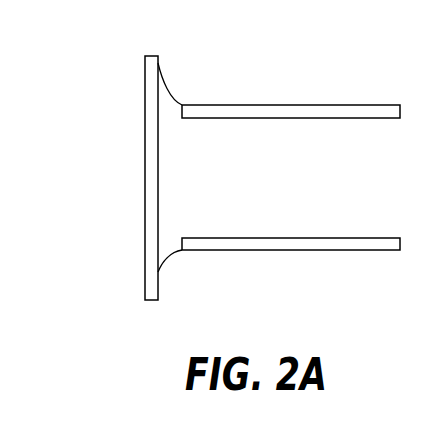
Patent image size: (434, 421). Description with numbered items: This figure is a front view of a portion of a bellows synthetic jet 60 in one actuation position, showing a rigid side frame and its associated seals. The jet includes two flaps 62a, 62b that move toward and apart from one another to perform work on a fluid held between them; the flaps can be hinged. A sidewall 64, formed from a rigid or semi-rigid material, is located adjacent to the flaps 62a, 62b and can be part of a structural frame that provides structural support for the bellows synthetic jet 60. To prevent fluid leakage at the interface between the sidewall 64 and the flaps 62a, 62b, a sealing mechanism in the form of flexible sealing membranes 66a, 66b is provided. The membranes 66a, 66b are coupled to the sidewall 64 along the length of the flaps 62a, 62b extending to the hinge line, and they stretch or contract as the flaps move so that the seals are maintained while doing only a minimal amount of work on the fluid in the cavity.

The bellows synthetic jet 60 is at (107, 55).
The sidewall 64 is at (145, 172).
The flap 62a is at (299, 105).
The flap 62b is at (299, 250).
The sealing membrane 66a is at (168, 90).
The sealing membrane 66b is at (164, 263).